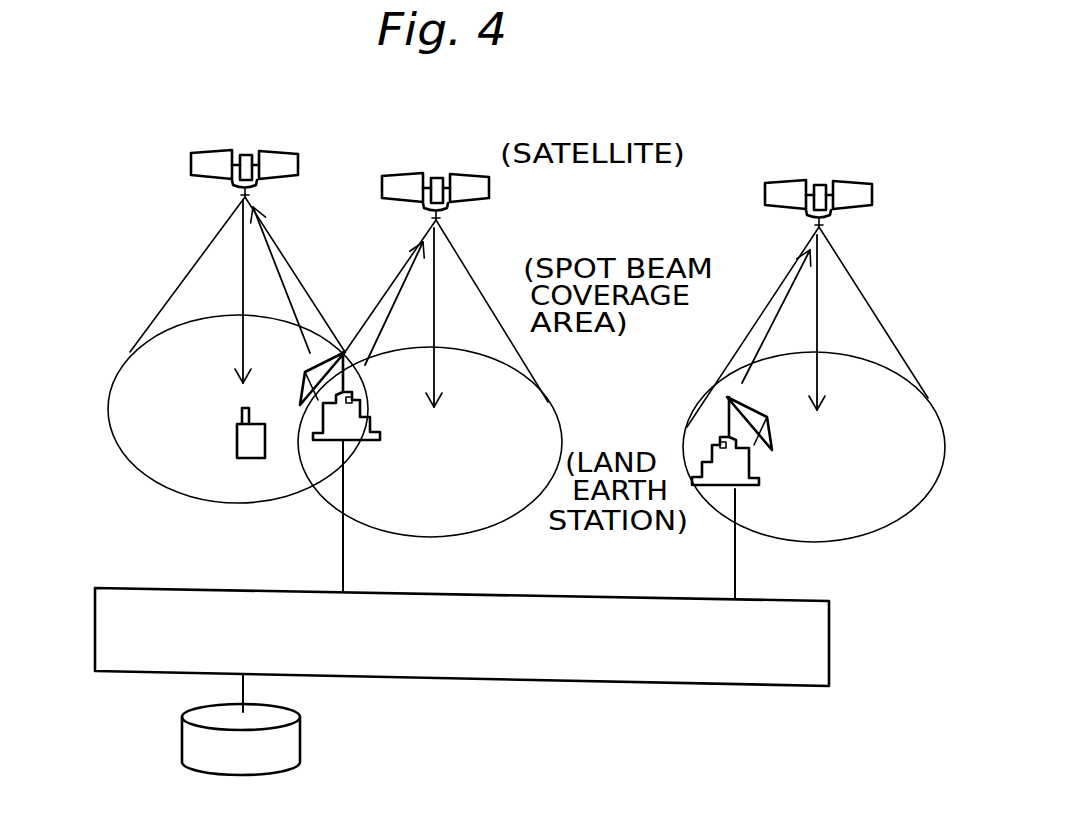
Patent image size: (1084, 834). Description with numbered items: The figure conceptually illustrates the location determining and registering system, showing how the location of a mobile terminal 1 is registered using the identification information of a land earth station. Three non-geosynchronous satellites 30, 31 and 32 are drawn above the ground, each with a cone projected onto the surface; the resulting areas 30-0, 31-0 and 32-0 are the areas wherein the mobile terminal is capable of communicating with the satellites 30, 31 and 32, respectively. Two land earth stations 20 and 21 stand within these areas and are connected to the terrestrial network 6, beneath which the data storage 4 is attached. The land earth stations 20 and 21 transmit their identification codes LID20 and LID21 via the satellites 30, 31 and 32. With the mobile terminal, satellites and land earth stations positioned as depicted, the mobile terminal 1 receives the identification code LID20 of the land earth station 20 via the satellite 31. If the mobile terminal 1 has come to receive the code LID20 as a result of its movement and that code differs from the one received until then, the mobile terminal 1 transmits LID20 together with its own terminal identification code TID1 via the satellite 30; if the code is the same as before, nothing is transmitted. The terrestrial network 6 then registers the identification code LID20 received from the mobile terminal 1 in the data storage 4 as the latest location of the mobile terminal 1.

The mobile terminal 1 is at (237, 442).
The data storage 4 is at (297, 742).
The terrestrial network 6 is at (829, 631).
The land earth station 20 is at (356, 394).
The land earth station 21 is at (688, 429).
The non-geosynchronous satellite 30 is at (419, 176).
The non-geosynchronous satellite 31 is at (233, 150).
The non-geosynchronous satellite 32 is at (806, 186).
The area 30-0 is at (550, 401).
The area 31-0 is at (238, 409).
The area 32-0 is at (814, 447).